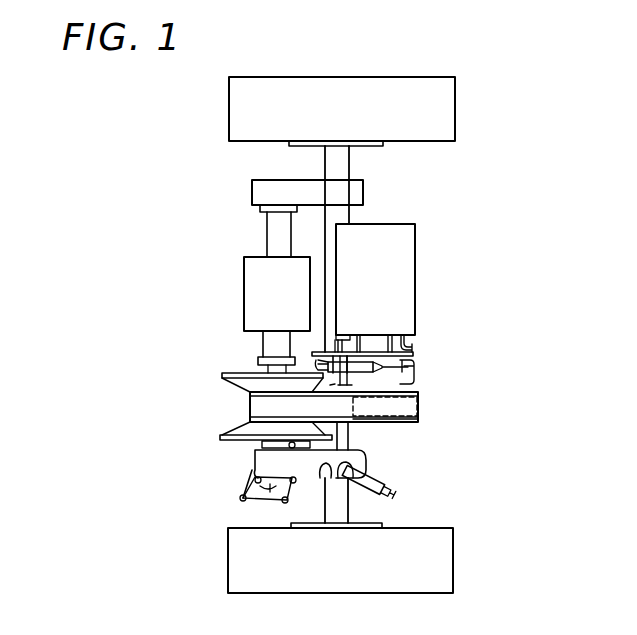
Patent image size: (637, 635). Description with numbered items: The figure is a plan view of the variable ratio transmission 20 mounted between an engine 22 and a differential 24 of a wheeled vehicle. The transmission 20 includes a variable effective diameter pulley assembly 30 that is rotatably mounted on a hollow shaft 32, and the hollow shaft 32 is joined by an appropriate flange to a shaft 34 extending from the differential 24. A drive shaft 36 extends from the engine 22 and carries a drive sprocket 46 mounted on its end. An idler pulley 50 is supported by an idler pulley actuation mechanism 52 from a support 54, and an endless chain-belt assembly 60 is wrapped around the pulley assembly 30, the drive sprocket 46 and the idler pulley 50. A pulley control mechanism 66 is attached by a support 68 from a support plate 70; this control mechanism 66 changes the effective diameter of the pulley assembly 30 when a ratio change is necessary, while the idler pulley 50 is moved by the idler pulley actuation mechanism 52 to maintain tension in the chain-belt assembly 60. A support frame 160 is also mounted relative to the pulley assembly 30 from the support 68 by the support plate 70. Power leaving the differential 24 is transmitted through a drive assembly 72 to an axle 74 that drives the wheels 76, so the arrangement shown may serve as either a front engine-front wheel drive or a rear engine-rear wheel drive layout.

The variable ratio transmission 20 is at (458, 380).
The engine 22 is at (410, 238).
The differential 24 is at (247, 272).
The variable effective diameter pulley assembly 30 is at (219, 438).
The hollow shaft 32 is at (254, 358).
The shaft 34 is at (272, 338).
The drive shaft 36 is at (363, 357).
The drive sprocket 46 is at (388, 428).
The idler pulley 50 is at (420, 408).
The idler pulley actuation mechanism 52 is at (424, 371).
The support 54 is at (412, 348).
The endless chain-belt assembly 60 is at (243, 403).
The pulley control mechanism 66 is at (392, 477).
The support 68 is at (268, 440).
The support plate 70 is at (353, 437).
The drive assembly 72 is at (250, 183).
The axle 74 is at (343, 162).
The wheels 76 is at (447, 98).
The support frame 160 is at (262, 472).